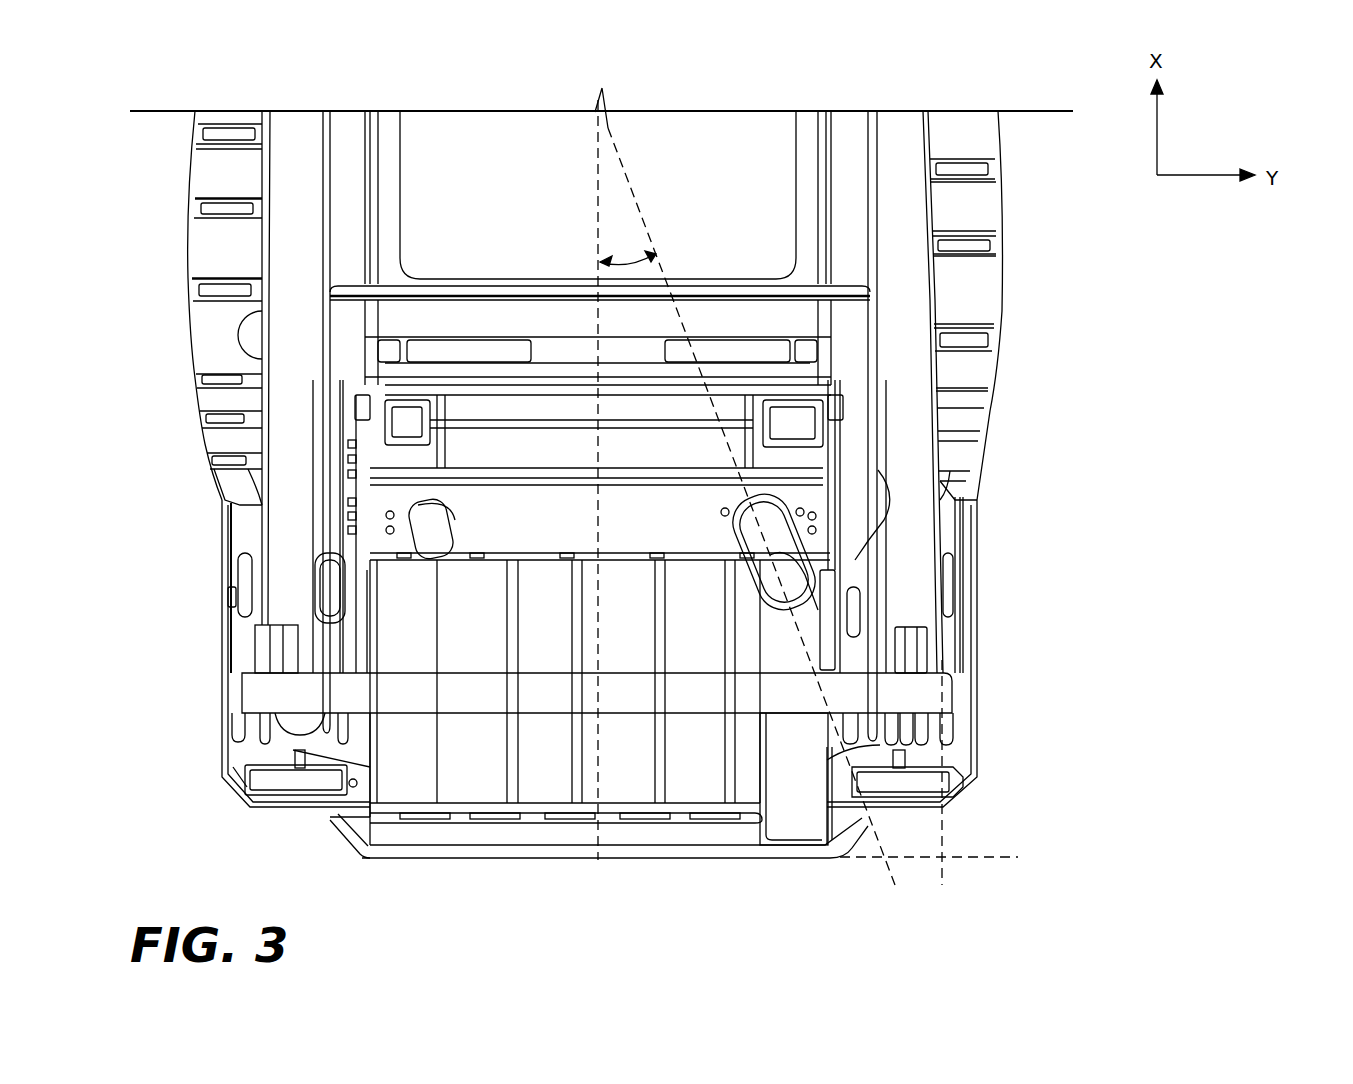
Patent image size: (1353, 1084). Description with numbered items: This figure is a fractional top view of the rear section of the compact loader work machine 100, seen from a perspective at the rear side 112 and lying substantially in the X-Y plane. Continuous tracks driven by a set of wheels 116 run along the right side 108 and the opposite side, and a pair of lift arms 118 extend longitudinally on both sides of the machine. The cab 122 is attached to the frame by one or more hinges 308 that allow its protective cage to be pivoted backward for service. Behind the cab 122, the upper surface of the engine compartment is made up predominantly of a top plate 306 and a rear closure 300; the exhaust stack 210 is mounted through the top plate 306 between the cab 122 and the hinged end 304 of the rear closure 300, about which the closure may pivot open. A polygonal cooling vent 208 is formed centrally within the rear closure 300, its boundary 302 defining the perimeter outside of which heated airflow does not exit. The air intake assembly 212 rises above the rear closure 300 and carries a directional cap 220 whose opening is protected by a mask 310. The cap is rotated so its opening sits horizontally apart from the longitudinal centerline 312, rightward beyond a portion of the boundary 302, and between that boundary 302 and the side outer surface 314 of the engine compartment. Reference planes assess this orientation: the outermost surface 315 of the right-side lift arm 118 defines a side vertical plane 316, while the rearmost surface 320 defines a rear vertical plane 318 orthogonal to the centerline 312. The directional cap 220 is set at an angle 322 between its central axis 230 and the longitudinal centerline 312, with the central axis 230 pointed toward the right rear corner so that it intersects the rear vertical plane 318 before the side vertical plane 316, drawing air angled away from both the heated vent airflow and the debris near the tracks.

The work machine 100 is at (484, 66).
The right side 108 is at (1010, 730).
The rear side 112 is at (600, 870).
The wheels 116 is at (1031, 392).
The lift arms 118 is at (900, 230).
The cab 122 is at (670, 133).
The cooling vent 208 is at (531, 788).
The exhaust stack 210 is at (430, 518).
The air intake assembly 212 is at (790, 531).
The directional cap 220 is at (840, 560).
The central axis 230 is at (888, 868).
The rear closure 300 is at (392, 808).
The boundary 302 is at (762, 735).
The hinged end 304 is at (348, 547).
The top plate 306 is at (480, 502).
The hinges 308 is at (810, 433).
The mask 310 is at (835, 640).
The longitudinal centerline 312 is at (593, 173).
The side outer surface 314 is at (905, 663).
The outermost surface 315 is at (937, 304).
The side vertical plane 316 is at (944, 817).
The rear vertical plane 318 is at (998, 857).
The rearmost surface 320 is at (418, 857).
The angle 322 is at (640, 255).